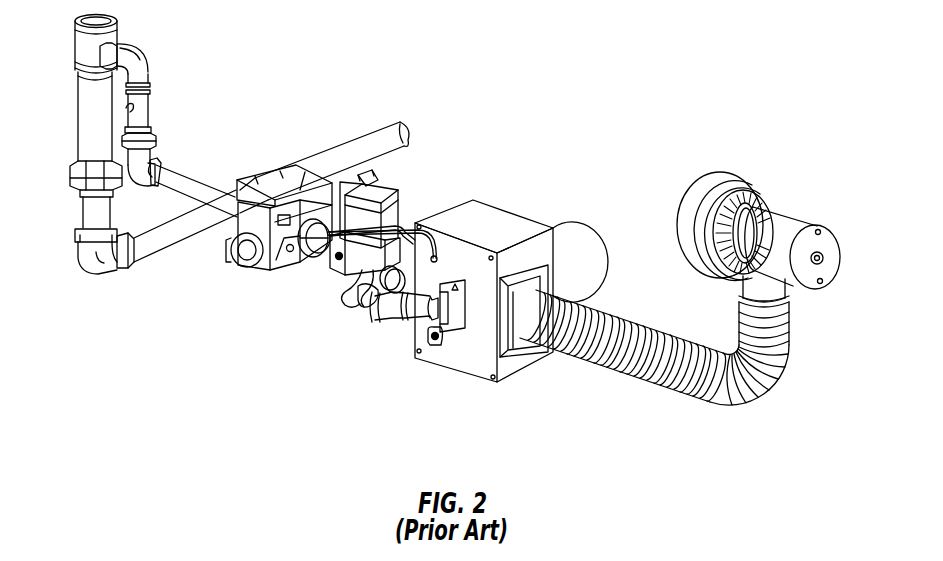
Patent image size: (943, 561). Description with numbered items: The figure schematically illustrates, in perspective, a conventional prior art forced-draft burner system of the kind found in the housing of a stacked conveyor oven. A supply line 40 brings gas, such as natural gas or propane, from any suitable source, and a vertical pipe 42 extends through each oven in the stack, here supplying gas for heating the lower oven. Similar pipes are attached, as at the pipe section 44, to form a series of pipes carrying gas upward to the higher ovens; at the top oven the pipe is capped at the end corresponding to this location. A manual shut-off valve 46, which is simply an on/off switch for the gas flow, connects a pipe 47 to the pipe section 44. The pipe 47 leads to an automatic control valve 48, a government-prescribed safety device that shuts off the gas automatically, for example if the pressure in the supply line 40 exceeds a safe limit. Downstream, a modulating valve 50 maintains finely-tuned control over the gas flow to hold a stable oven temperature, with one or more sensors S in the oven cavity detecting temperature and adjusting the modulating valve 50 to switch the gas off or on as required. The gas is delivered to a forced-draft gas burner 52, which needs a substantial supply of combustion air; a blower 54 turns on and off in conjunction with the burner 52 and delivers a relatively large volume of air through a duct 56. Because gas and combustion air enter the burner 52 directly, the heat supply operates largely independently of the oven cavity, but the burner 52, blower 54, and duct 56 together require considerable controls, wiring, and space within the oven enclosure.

The supply line 40 is at (388, 128).
The vertical pipe 42 is at (92, 112).
The pipe section 44 is at (76, 26).
The manual shut-off valve 46 is at (144, 108).
The pipe 47 is at (183, 176).
The automatic control valve 48 is at (256, 266).
The modulating valve 50 is at (406, 185).
The sensors S is at (404, 180).
The forced-draft gas burner 52 is at (448, 362).
The blower 54 is at (771, 192).
The duct 56 is at (627, 373).